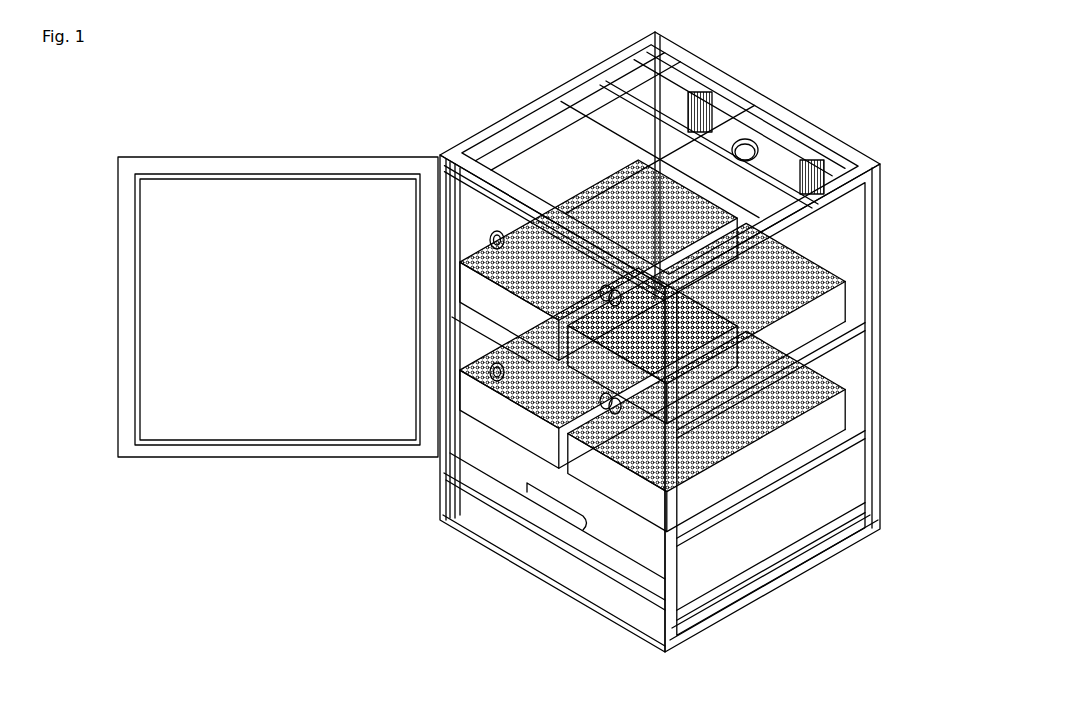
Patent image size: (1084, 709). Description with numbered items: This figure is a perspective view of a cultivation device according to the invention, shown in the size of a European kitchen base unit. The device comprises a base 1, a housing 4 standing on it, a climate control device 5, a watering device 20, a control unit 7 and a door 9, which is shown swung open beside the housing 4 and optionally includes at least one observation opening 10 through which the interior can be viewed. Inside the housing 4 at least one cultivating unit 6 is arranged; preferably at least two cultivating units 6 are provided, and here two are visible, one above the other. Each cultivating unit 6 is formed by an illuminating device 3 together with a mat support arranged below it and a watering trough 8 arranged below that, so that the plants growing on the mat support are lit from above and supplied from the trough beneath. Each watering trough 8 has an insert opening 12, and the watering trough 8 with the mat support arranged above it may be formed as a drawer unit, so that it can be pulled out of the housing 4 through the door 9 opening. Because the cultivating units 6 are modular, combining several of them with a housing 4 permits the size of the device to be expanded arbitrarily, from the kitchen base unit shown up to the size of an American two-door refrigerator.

The base 1 is at (544, 558).
The illuminating device 3 is at (602, 158).
The housing 4 is at (881, 160).
The climate control device 5 is at (725, 127).
The cultivating unit 6 is at (463, 237).
The control unit 7 is at (776, 551).
The watering trough 8 is at (472, 305).
The door 9 is at (128, 289).
The observation opening 10 is at (205, 305).
The insert opening 12 is at (500, 240).
The watering device 20 is at (716, 551).